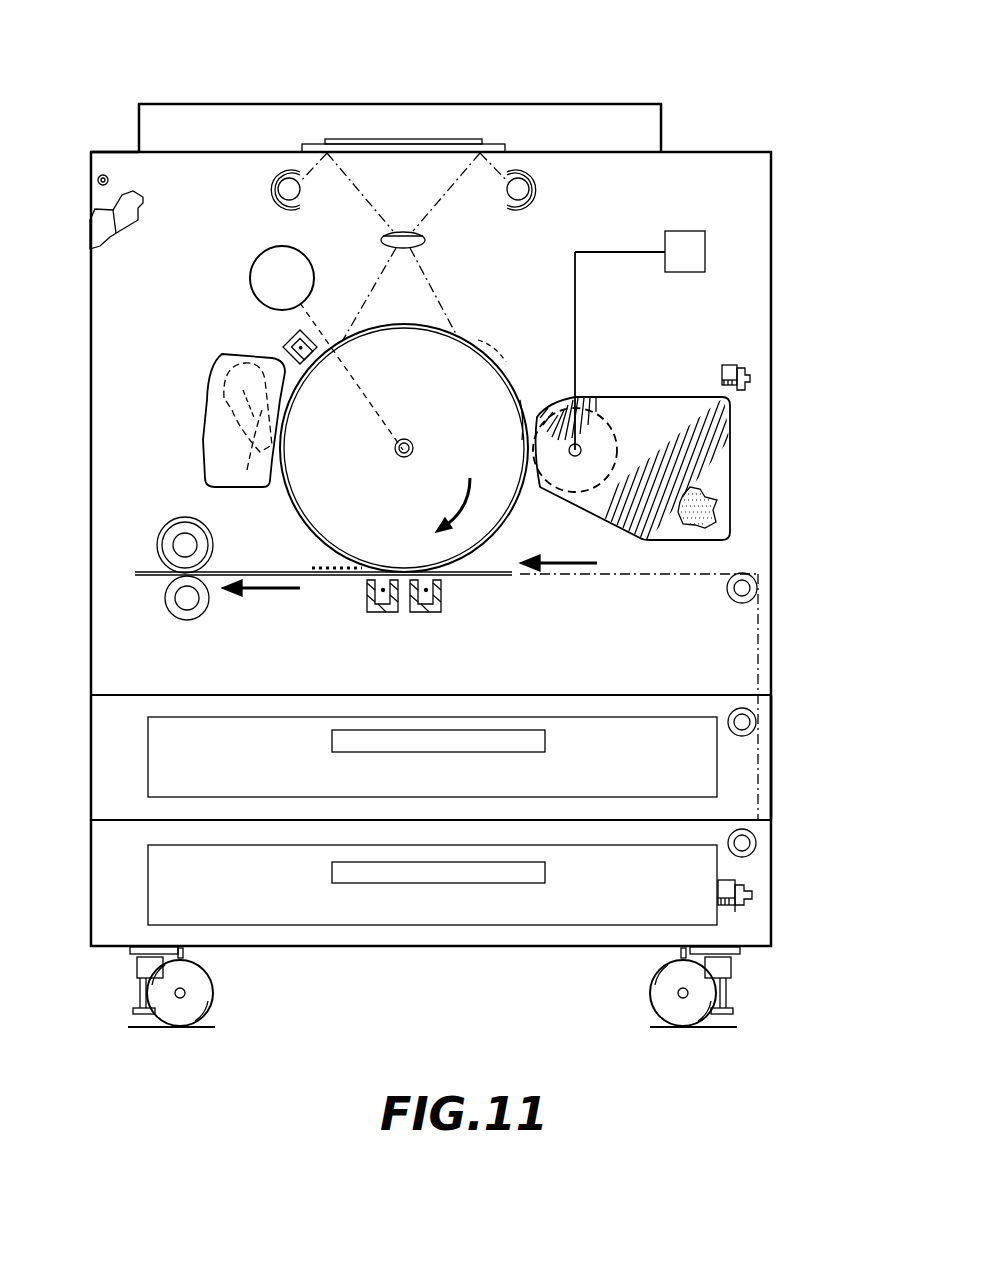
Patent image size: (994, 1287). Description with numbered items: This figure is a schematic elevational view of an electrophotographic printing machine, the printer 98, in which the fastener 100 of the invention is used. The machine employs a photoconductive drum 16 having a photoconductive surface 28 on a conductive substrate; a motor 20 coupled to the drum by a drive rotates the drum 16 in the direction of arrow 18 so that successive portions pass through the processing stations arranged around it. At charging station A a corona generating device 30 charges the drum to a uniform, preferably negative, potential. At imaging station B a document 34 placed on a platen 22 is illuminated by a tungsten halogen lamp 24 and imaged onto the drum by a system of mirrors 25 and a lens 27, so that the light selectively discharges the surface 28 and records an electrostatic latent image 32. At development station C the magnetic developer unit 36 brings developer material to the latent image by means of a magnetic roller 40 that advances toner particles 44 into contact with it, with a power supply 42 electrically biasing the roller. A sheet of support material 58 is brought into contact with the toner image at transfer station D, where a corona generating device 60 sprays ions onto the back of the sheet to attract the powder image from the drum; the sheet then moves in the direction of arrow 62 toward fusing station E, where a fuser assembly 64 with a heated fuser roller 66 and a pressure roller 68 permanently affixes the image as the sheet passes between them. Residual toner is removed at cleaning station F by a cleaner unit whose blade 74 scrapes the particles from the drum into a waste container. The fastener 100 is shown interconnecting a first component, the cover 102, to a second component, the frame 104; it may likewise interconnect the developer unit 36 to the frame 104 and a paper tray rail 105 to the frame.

The printer 98 is at (739, 85).
The cover 102 is at (110, 157).
The fastener 100 is at (96, 180).
The frame 104 is at (98, 227).
The paper tray rail 105 is at (733, 911).
The platen 22 is at (305, 146).
The document 34 is at (476, 141).
The imaging station B is at (553, 175).
The tungsten halogen lamp 24 is at (300, 190).
The mirrors 25 is at (280, 206).
The lens 27 is at (387, 246).
The motor 20 is at (298, 257).
The photoconductive drum 16 is at (441, 324).
The surface 28 is at (512, 385).
The arrow 18 is at (455, 496).
The electrostatic latent image 32 is at (496, 347).
The corona generating device 30 is at (285, 338).
The charging station A is at (268, 342).
The blade 74 is at (247, 472).
The cleaning station F is at (184, 401).
The fuser assembly 64 is at (172, 503).
The fuser roller 66 is at (170, 526).
The pressure roller 68 is at (190, 608).
The fusing station E is at (154, 622).
The arrow 62 is at (273, 590).
The sheet of support material 58 is at (328, 564).
The corona generating device 60 is at (442, 598).
The transfer station D is at (353, 608).
The developer unit 36 is at (631, 378).
The development station C is at (540, 390).
The magnetic roller 40 is at (578, 446).
The power supply 42 is at (700, 253).
The toner particles 44 is at (713, 503).